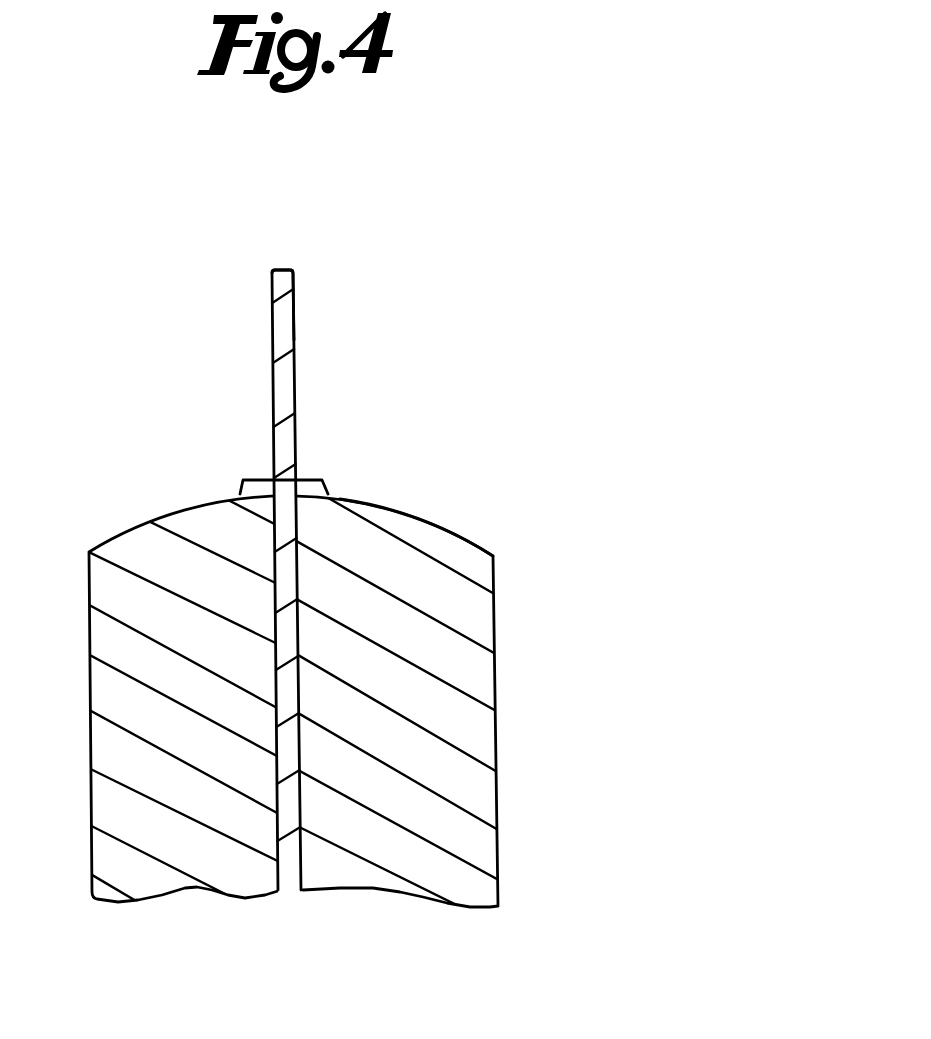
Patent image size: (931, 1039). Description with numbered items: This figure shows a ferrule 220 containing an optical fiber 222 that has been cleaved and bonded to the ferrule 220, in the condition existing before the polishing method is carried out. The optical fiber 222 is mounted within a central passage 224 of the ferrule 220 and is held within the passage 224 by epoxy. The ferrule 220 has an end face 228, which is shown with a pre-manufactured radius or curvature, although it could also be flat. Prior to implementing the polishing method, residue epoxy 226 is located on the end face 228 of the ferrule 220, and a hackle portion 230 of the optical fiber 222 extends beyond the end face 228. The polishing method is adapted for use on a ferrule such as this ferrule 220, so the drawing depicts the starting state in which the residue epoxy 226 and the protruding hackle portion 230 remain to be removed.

The ferrule 220 is at (615, 649).
The optical fiber 222 is at (318, 367).
The central passage 224 is at (303, 808).
The residue epoxy 226 is at (242, 487).
The end face 228 is at (433, 521).
The hackle portion 230 is at (272, 325).